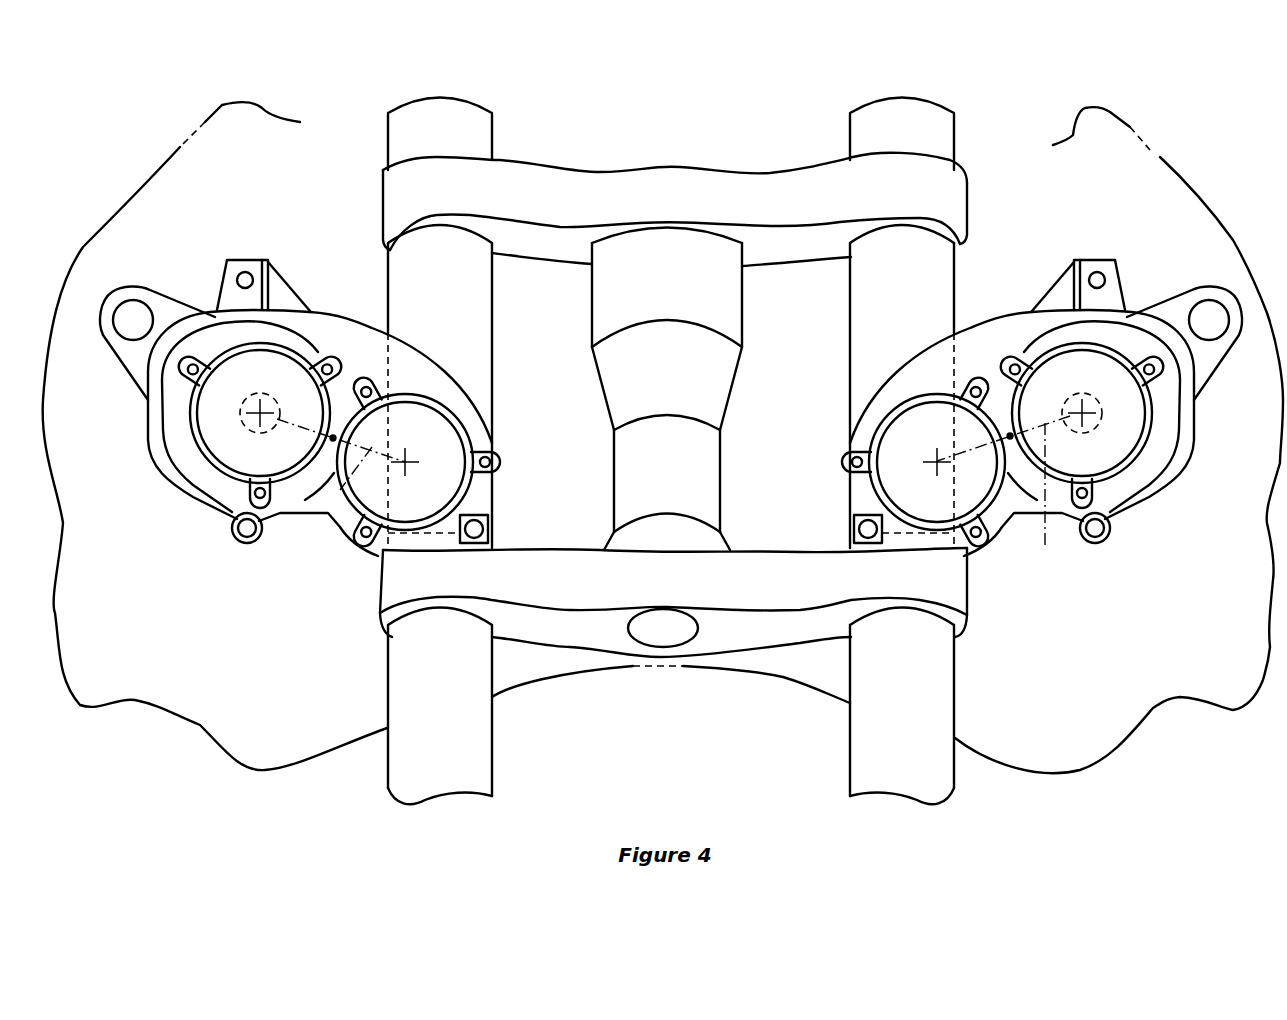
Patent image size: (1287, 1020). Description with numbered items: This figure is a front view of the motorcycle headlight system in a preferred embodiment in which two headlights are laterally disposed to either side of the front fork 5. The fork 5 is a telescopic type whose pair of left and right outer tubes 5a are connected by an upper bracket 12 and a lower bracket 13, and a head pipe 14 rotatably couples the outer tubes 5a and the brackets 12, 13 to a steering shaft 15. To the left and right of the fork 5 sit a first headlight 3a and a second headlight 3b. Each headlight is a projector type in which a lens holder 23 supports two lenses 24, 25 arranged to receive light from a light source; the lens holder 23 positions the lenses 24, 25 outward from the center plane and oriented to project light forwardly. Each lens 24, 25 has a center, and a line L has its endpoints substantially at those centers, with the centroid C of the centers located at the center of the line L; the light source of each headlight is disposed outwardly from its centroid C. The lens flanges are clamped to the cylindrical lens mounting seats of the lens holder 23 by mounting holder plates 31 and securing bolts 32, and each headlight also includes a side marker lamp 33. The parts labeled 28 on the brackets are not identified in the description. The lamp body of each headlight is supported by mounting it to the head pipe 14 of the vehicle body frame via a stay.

The front fork 5 is at (962, 128).
The outer tubes 5a is at (385, 275).
The upper bracket 12 is at (578, 163).
The lower bracket 13 is at (567, 648).
The head pipe 14 is at (742, 310).
The steering shaft 15 is at (667, 633).
The lens holder 23 is at (442, 357).
The lens 24 is at (210, 417).
The lens 25 is at (442, 438).
The mounting boss 28 is at (245, 276).
The mounting holder plates 31 is at (200, 448).
The securing bolts 32 is at (183, 371).
The side marker lamp 33 is at (131, 317).
The first headlight 3a is at (175, 489).
The second headlight 3b is at (1174, 485).
The centroid C is at (333, 438).
The line L is at (340, 490).